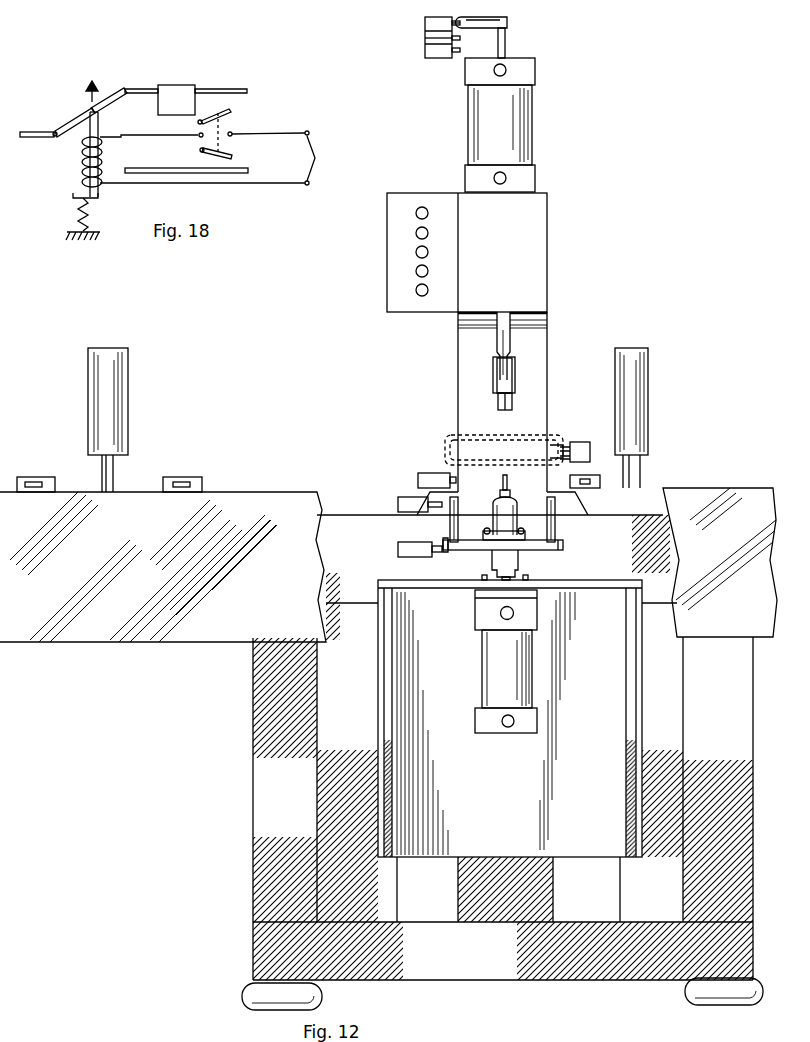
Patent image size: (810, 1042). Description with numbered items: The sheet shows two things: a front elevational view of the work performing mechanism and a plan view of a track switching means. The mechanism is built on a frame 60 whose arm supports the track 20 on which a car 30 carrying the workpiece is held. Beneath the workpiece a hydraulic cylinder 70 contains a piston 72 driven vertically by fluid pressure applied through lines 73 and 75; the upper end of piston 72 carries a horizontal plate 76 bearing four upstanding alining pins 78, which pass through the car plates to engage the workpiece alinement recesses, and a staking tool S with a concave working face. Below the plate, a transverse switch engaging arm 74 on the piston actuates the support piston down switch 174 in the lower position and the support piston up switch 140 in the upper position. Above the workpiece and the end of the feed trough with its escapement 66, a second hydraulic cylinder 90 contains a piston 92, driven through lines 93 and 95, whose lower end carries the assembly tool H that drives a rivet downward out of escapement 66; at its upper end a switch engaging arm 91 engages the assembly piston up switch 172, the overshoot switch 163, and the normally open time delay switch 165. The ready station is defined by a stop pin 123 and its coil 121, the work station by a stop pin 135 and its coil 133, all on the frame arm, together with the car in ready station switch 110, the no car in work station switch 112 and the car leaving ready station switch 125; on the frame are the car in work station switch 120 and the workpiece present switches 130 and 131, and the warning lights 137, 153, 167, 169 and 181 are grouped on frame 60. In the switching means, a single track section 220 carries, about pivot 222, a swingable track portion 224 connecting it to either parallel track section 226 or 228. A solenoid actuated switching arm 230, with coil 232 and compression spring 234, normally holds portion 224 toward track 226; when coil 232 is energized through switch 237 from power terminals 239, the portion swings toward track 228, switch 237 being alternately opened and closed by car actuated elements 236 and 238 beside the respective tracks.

In FIG. 12, the track 20 is at (132, 630).
In FIG. 18, the car 30 is at (177, 85).
In FIG. 12, the frame 60 is at (263, 793).
In FIG. 12, the escapement 66 is at (494, 400).
In FIG. 12, the hydraulic cylinder 70 is at (523, 672).
In FIG. 12, the piston 72 is at (500, 577).
In FIG. 12, the line 73 is at (500, 613).
In FIG. 12, the switch engaging arm 74 is at (443, 552).
In FIG. 12, the line 75 is at (508, 727).
In FIG. 12, the horizontal plate 76 is at (564, 550).
In FIG. 12, the alining pins 78 is at (450, 528).
In FIG. 12, the hydraulic cylinder 90 is at (517, 128).
In FIG. 12, the switch engaging arm 91 is at (507, 22).
In FIG. 12, the piston 92 is at (498, 338).
In FIG. 12, the line 93 is at (507, 67).
In FIG. 12, the line 95 is at (507, 175).
In FIG. 12, the car in ready station switch 110 is at (43, 475).
In FIG. 12, the no car in work station switch 112 is at (433, 472).
In FIG. 12, the car in work station switch 120 is at (588, 488).
In FIG. 12, the coil 121 is at (122, 420).
In FIG. 12, the ready station stop pin 123 is at (113, 472).
In FIG. 12, the car leaving ready station switch 125 is at (182, 475).
In FIG. 12, the workpiece present switch 130 is at (580, 442).
In FIG. 12, the workpiece present switch 131 is at (585, 461).
In FIG. 12, the coil 133 is at (641, 422).
In FIG. 12, the work station stop pin 135 is at (641, 472).
In FIG. 12, the yellow light 137 is at (413, 213).
In FIG. 12, the support piston up switch 140 is at (408, 500).
In FIG. 12, the warning light 153 is at (413, 233).
In FIG. 12, the switch 163 is at (432, 60).
In FIG. 12, the time delay switch 165 is at (425, 40).
In FIG. 12, the warning light 167 is at (413, 252).
In FIG. 12, the warning light 169 is at (413, 271).
In FIG. 12, the assembly piston up switch 172 is at (424, 23).
In FIG. 12, the support piston down switch 174 is at (398, 550).
In FIG. 12, the warning light 181 is at (413, 290).
In FIG. 12, the assembly tool H is at (508, 363).
In FIG. 12, the tool S is at (499, 476).
In FIG. 18, the single track section 220 is at (38, 130).
In FIG. 18, the pivot 222 is at (52, 140).
In FIG. 18, the swingable track portion 224 is at (108, 97).
In FIG. 18, the parallel track section 226 is at (233, 88).
In FIG. 18, the parallel track section 228 is at (188, 168).
In FIG. 18, the switching arm 230 is at (95, 128).
In FIG. 18, the coil 232 is at (99, 172).
In FIG. 18, the compression spring 234 is at (78, 211).
In FIG. 18, the car actuated element 236 is at (231, 110).
In FIG. 18, the switch 237 is at (232, 133).
In FIG. 18, the car actuated element 238 is at (233, 157).
In FIG. 18, the terminals 239 is at (328, 160).